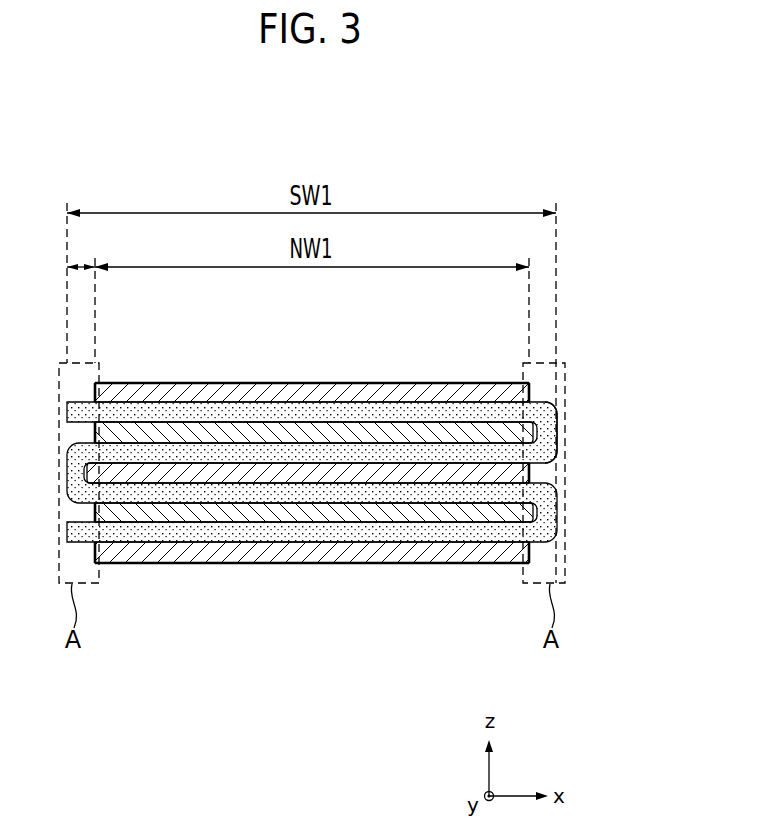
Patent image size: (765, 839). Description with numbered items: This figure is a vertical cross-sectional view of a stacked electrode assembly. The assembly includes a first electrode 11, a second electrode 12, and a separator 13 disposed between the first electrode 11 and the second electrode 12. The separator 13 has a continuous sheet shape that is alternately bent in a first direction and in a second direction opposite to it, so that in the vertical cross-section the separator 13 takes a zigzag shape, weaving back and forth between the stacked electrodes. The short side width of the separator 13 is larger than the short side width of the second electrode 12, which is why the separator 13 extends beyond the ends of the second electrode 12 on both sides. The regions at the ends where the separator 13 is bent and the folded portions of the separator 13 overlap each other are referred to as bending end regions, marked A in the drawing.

The first electrode 11 is at (185, 420).
The second electrode 12 is at (304, 390).
The separator 13 is at (545, 432).